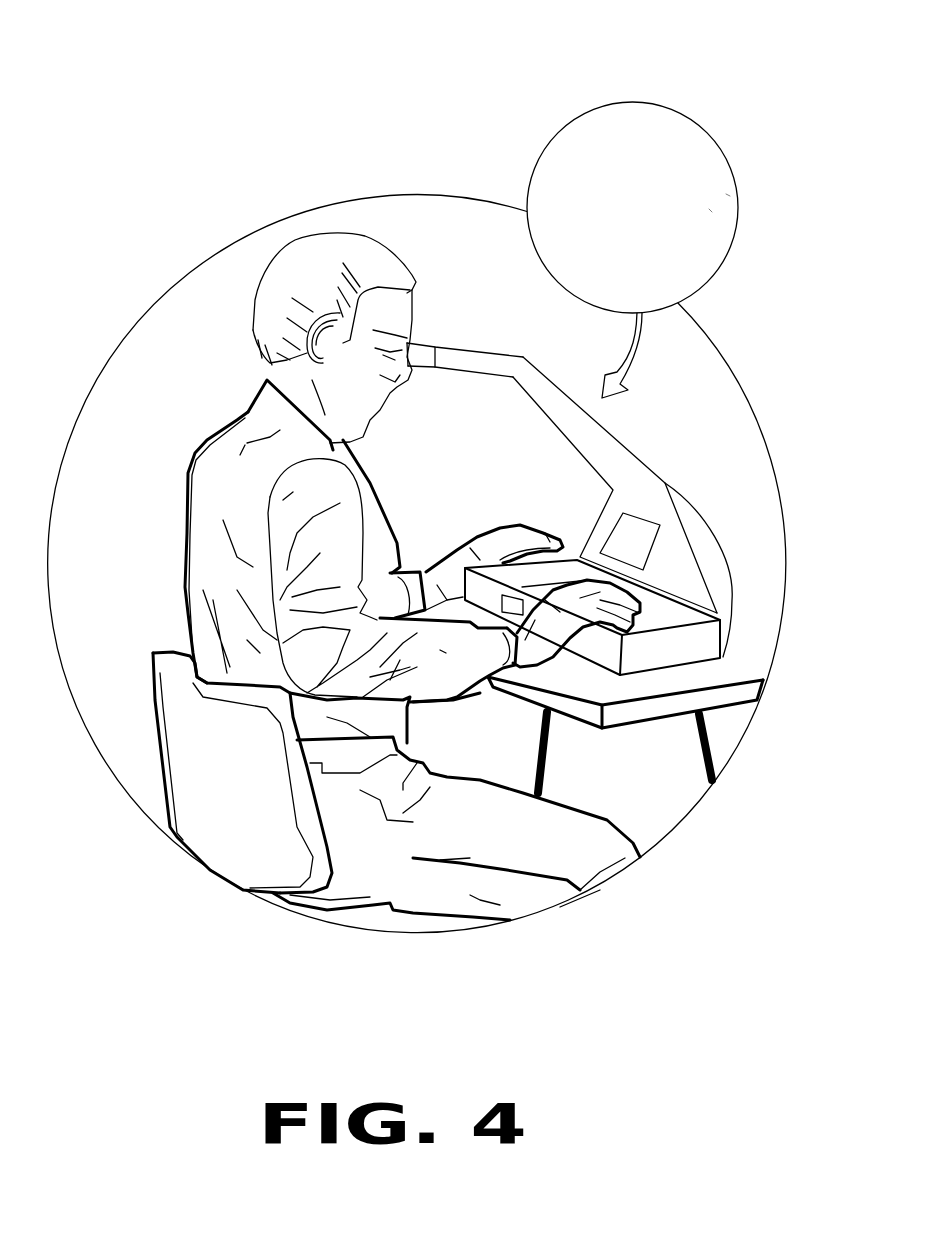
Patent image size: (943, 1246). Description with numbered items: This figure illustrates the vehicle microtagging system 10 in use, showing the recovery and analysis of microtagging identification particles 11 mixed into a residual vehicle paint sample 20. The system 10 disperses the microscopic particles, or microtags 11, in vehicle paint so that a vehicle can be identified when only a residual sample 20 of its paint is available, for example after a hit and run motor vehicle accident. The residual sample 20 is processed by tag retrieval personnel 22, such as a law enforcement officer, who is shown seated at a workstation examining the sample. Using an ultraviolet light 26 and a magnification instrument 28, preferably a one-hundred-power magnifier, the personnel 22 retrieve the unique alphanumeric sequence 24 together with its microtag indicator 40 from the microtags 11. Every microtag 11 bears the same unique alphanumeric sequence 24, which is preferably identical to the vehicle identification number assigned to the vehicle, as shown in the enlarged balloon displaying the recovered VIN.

The vehicle microtagging system 10 is at (716, 111).
The microtagging identification particles 11 is at (672, 193).
The residual vehicle paint sample 20 is at (584, 155).
The tag retrieval personnel 22 is at (267, 380).
The unique alphanumeric sequence 24 is at (710, 210).
The ultraviolet light 26 is at (477, 360).
The magnification instrument 28 is at (477, 360).
The microtag indicator 40 is at (727, 193).